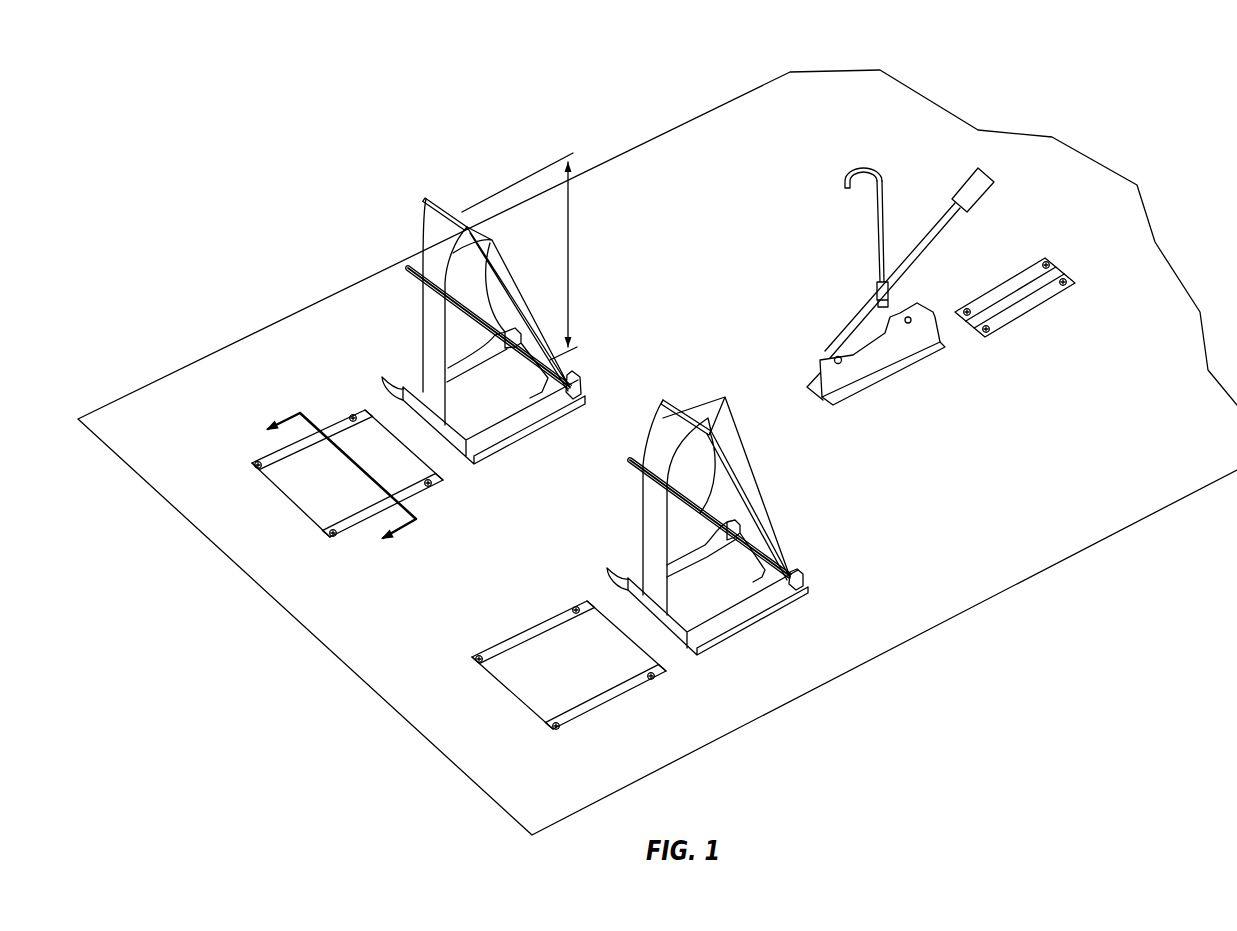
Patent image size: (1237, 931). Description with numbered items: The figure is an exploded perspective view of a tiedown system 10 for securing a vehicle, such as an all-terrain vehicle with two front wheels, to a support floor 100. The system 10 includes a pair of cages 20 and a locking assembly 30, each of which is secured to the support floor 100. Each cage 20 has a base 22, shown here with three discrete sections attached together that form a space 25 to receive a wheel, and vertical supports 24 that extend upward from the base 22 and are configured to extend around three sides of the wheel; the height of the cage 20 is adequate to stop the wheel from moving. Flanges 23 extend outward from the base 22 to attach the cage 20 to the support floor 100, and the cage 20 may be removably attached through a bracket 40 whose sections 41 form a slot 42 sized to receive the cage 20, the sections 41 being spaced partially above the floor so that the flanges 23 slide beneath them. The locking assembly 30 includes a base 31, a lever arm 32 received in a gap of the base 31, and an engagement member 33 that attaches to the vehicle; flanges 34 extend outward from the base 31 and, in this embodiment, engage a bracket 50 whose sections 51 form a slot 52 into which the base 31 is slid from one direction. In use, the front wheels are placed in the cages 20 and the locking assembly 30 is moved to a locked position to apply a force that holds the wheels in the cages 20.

The tiedown system 10 is at (1008, 90).
The support floor 100 is at (1062, 444).
The cage 20 is at (624, 302).
The base 22 is at (580, 391).
The flange 23 is at (396, 402).
The vertical support 24 is at (621, 403).
The space 25 is at (473, 405).
The locking assembly 30 is at (826, 206).
The base 31 is at (843, 365).
The lever arm 32 is at (960, 222).
The engagement member 33 is at (878, 225).
The flange 34 is at (905, 357).
The bracket 40 is at (303, 403).
The section 41 is at (341, 410).
The slot 42 is at (389, 468).
The bracket 50 is at (1076, 302).
The section 51 is at (1003, 286).
The slot 52 is at (981, 313).